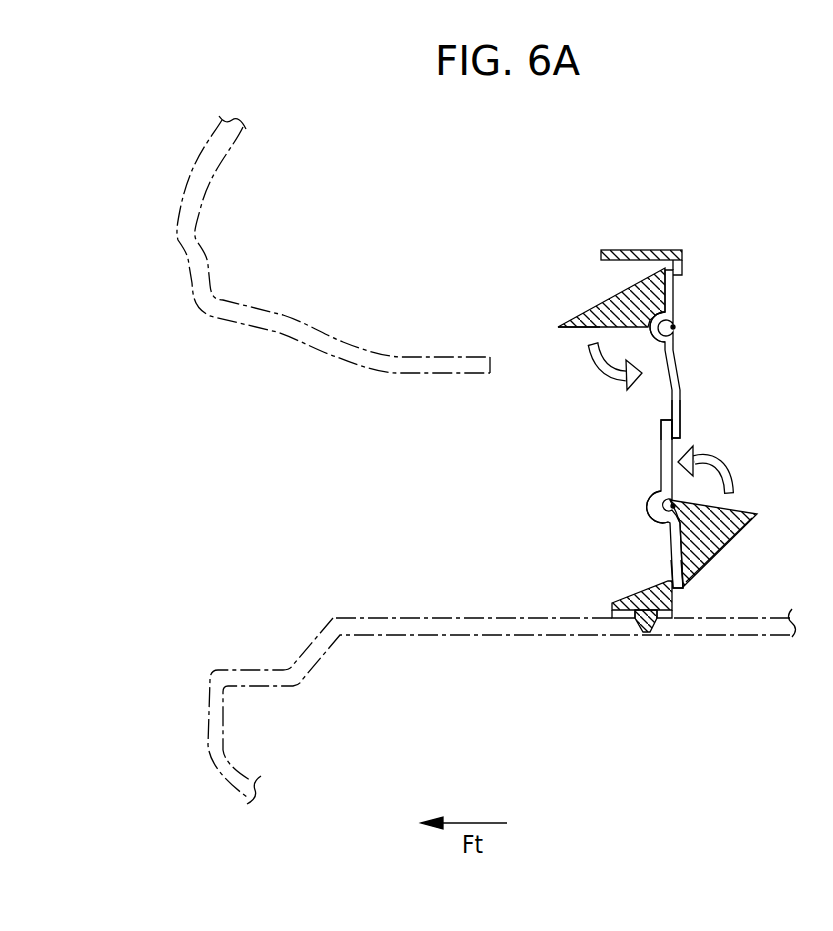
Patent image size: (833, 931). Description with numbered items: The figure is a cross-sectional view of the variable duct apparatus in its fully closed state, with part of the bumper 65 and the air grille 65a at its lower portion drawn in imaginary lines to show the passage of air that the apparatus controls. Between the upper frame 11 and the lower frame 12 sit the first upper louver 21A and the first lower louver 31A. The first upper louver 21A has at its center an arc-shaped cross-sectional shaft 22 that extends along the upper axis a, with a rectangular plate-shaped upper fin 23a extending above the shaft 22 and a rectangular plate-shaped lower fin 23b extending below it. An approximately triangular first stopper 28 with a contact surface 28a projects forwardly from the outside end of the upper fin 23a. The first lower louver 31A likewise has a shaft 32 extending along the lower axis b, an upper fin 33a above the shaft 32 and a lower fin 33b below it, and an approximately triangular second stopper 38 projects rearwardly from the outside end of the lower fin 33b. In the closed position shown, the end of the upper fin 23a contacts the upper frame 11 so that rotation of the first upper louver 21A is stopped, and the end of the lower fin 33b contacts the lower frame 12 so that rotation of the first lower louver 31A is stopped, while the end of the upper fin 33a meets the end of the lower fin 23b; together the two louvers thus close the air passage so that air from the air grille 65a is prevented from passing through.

The upper frame 11 is at (630, 249).
The lower frame 12 is at (666, 612).
The first upper louver 21A is at (676, 352).
The shaft 22 is at (669, 318).
The upper fin 23a is at (679, 290).
The lower fin 23b is at (682, 403).
The first stopper 28 is at (602, 300).
The contact surface 28a is at (558, 327).
The first lower louver 31A is at (661, 460).
The shaft 32 is at (654, 500).
The upper fin 33a is at (661, 425).
The lower fin 33b is at (676, 567).
The second stopper 38 is at (757, 514).
The bumper 65 is at (189, 181).
The air grille 65a is at (297, 470).
The upper axis a is at (676, 327).
The lower axis b is at (676, 506).